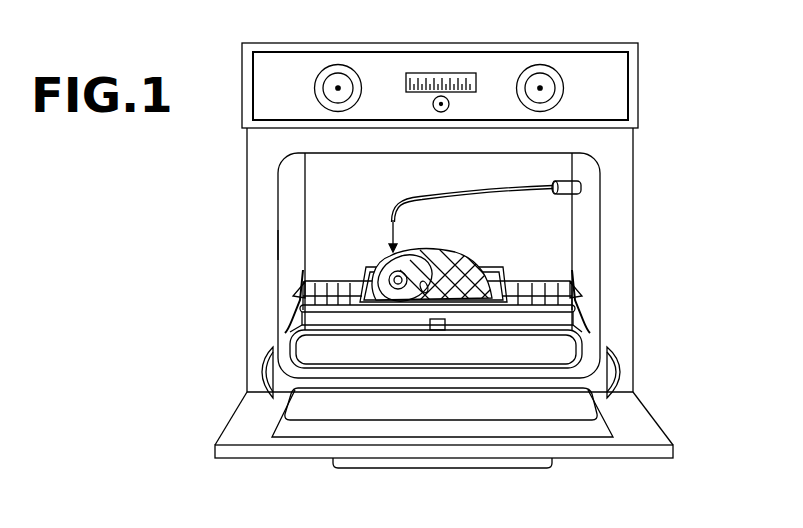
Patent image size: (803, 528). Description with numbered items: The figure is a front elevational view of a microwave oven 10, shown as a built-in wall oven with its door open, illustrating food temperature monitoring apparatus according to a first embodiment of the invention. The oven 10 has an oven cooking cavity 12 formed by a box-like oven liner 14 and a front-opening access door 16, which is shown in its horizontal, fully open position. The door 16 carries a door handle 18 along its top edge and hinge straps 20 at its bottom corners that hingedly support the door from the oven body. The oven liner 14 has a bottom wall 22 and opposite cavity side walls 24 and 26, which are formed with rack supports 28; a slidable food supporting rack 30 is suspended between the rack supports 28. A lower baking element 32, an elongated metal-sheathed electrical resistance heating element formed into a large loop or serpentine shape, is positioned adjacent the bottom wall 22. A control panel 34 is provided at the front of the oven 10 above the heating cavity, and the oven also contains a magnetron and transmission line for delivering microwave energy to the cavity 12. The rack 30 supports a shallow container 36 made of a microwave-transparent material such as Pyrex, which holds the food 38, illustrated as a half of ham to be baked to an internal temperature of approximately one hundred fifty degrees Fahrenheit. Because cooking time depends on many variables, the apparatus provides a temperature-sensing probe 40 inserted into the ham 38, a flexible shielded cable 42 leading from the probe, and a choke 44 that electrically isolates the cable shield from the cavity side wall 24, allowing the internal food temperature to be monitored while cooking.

The microwave oven 10 is at (348, 30).
The oven cooking cavity 12 is at (360, 188).
The oven liner 14 is at (298, 240).
The access door 16 is at (637, 422).
The door handle 18 is at (455, 468).
The hinge straps 20 is at (262, 375).
The bottom wall 22 is at (462, 372).
The cavity side wall 24 is at (590, 213).
The cavity side wall 26 is at (291, 199).
The rack supports 28 is at (587, 296).
The food supporting rack 30 is at (535, 279).
The lower baking element 32 is at (578, 348).
The control panel 34 is at (618, 68).
The shallow container 36 is at (370, 268).
The food 38 is at (452, 258).
The temperature-sensing probe 40 is at (391, 247).
The flexible shielded cable 42 is at (457, 196).
The choke 44 is at (557, 182).